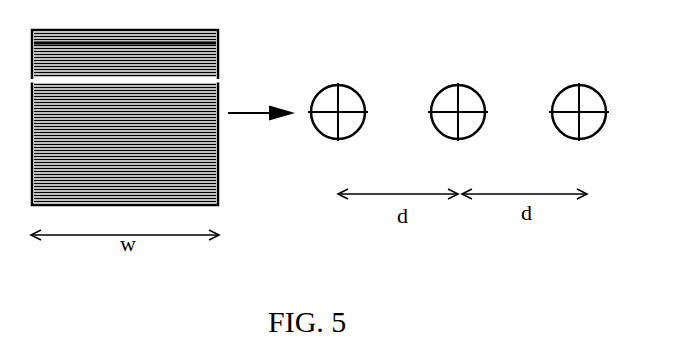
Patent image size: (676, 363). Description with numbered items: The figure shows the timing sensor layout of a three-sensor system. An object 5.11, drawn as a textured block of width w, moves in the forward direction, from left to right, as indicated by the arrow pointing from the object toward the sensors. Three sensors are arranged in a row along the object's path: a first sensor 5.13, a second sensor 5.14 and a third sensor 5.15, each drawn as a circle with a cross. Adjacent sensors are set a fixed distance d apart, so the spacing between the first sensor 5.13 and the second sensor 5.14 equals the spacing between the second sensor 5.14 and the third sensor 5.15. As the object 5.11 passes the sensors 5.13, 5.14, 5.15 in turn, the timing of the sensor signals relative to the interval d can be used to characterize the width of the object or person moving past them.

The object 5.11 is at (125, 117).
The sensor 5.13 is at (338, 79).
The sensor 5.14 is at (458, 79).
The sensor 5.15 is at (579, 79).